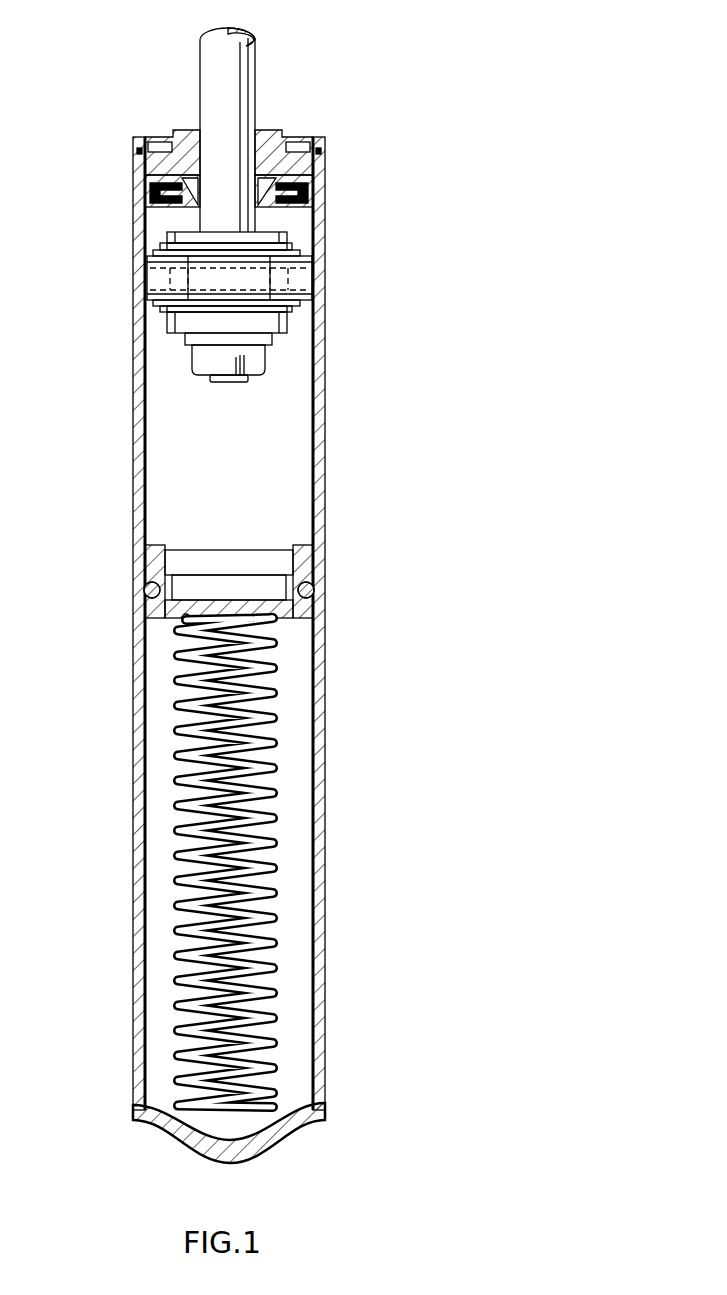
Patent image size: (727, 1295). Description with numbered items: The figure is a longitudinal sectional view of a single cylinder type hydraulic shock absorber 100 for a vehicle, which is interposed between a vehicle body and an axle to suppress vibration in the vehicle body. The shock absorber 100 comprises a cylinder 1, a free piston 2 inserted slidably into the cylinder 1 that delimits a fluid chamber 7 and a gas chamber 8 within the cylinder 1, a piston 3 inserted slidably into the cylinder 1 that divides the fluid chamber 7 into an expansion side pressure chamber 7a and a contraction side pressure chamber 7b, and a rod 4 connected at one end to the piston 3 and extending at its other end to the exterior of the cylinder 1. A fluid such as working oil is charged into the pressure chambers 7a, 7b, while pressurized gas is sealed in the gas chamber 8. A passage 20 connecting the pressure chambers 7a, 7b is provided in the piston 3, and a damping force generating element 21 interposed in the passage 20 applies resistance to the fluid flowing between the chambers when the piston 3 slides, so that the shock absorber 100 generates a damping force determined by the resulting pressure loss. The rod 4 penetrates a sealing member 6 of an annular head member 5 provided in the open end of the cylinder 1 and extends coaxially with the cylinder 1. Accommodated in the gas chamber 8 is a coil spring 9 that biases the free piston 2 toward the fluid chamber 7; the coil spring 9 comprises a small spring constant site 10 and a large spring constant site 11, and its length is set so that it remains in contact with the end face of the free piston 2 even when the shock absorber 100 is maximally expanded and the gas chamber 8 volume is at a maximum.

The cylinder 1 is at (133, 660).
The free piston 2 is at (305, 560).
The piston 3 is at (165, 280).
The rod 4 is at (212, 57).
The annular head member 5 is at (322, 168).
The sealing member 6 is at (178, 215).
The fluid chamber 7 is at (256, 304).
The expansion side pressure chamber 7a is at (298, 226).
The contraction side pressure chamber 7b is at (279, 341).
The gas chamber 8 is at (290, 845).
The coil spring 9 is at (168, 796).
The small spring constant site 10 is at (178, 955).
The large spring constant site 11 is at (178, 720).
The passage 20 is at (310, 280).
The damping force generating element 21 is at (168, 246).
The single cylinder type hydraulic shock absorber 100 is at (348, 101).